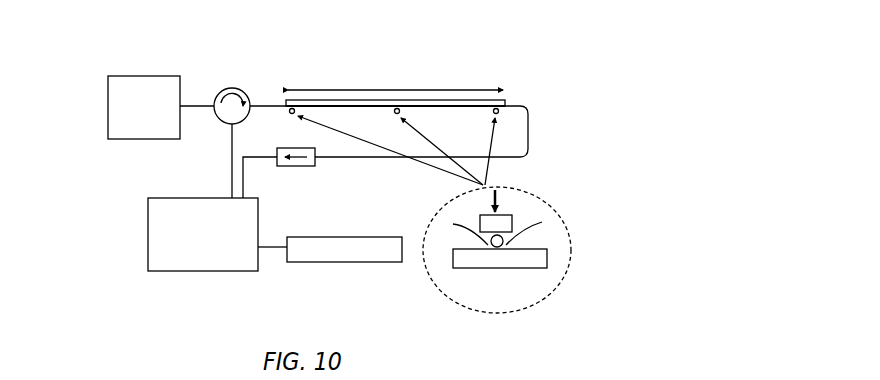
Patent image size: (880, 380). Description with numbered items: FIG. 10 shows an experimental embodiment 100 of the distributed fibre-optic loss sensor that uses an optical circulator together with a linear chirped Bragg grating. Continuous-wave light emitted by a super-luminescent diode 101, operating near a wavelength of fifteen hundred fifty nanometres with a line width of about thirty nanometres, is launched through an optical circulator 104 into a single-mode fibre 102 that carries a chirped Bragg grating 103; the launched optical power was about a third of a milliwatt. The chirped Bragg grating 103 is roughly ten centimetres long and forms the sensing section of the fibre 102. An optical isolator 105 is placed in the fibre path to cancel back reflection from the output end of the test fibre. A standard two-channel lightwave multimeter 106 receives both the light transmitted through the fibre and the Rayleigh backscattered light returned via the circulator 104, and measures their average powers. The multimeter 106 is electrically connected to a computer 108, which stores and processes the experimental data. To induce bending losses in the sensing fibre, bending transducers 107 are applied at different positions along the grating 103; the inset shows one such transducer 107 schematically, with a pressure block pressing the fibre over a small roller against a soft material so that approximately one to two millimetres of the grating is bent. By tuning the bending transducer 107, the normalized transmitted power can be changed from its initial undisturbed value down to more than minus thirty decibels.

The experimental embodiment with optical circulator and linear chirped Bragg grating 100 is at (129, 50).
The super-luminescent diode 101 is at (137, 139).
The single-mode fibre 102 is at (263, 101).
The chirped Bragg grating 103 is at (462, 100).
The optical circulator 104 is at (228, 114).
The optical isolator 105 is at (305, 162).
The lightwave multimeter 106 is at (148, 231).
The bending transducer 107 is at (458, 207).
The computer 108 is at (381, 253).